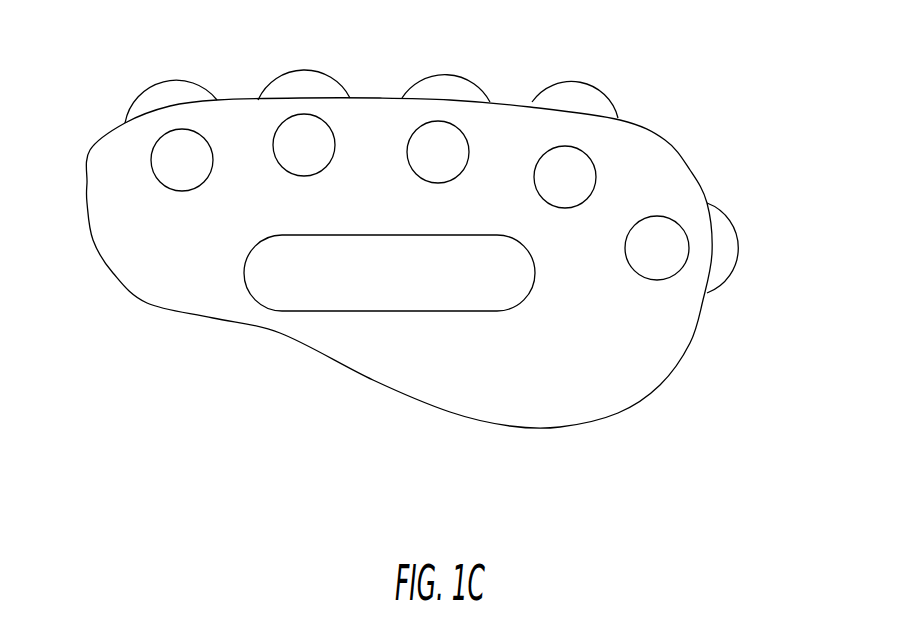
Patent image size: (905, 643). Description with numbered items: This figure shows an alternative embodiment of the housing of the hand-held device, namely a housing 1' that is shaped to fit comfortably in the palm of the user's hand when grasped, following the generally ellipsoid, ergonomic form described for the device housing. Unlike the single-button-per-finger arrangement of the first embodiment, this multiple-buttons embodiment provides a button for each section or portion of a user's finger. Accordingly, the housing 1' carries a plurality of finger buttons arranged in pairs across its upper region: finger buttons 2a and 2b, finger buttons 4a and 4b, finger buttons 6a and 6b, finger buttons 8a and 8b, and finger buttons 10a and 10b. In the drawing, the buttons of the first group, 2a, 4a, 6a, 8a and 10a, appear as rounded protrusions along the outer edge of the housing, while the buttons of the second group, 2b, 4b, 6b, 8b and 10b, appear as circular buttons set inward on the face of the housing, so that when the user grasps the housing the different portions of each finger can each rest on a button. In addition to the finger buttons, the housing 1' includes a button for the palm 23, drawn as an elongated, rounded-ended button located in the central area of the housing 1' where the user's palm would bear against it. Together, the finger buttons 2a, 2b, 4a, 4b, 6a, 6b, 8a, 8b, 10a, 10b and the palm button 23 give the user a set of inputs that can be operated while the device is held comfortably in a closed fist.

The housing 1' is at (399, 296).
The finger button 2a is at (155, 103).
The finger button 2b is at (177, 165).
The finger button 4a is at (298, 83).
The finger button 4b is at (315, 138).
The finger button 6a is at (455, 85).
The finger button 6b is at (448, 150).
The finger button 8a is at (587, 102).
The finger button 8b is at (572, 180).
The finger button 10a is at (722, 250).
The finger button 10b is at (658, 250).
The button for the palm 23 is at (308, 290).